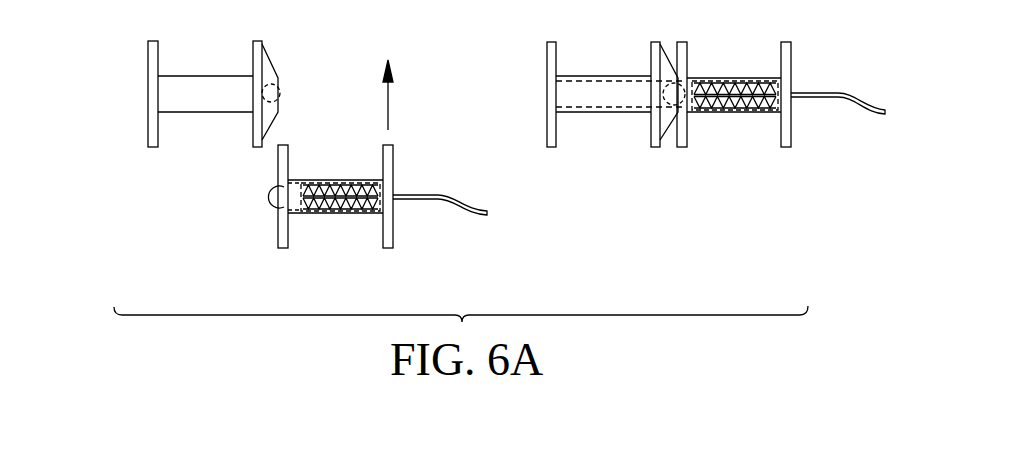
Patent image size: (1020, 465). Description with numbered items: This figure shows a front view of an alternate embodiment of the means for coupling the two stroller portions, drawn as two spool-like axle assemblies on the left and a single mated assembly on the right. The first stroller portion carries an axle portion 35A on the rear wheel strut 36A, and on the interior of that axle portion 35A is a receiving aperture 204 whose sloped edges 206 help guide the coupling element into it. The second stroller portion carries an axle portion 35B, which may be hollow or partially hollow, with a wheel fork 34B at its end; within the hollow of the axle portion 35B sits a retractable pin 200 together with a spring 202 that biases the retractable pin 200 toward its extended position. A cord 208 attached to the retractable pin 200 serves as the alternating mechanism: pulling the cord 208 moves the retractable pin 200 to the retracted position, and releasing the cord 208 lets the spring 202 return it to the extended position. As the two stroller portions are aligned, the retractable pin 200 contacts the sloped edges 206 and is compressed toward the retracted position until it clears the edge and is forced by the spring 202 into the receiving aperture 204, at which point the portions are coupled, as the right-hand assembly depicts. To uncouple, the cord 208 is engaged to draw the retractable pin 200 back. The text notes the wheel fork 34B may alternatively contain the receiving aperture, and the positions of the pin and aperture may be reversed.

The rear wheel strut 36A is at (148, 55).
The axle portion 35A is at (207, 76).
The receiving aperture 204 is at (277, 90).
The sloped edges 206 is at (272, 127).
The retractable pin 200 is at (266, 196).
The spring 202 is at (345, 180).
The axle portion 35B is at (335, 215).
The wheel fork 34B is at (393, 161).
The cord 208 is at (463, 216).